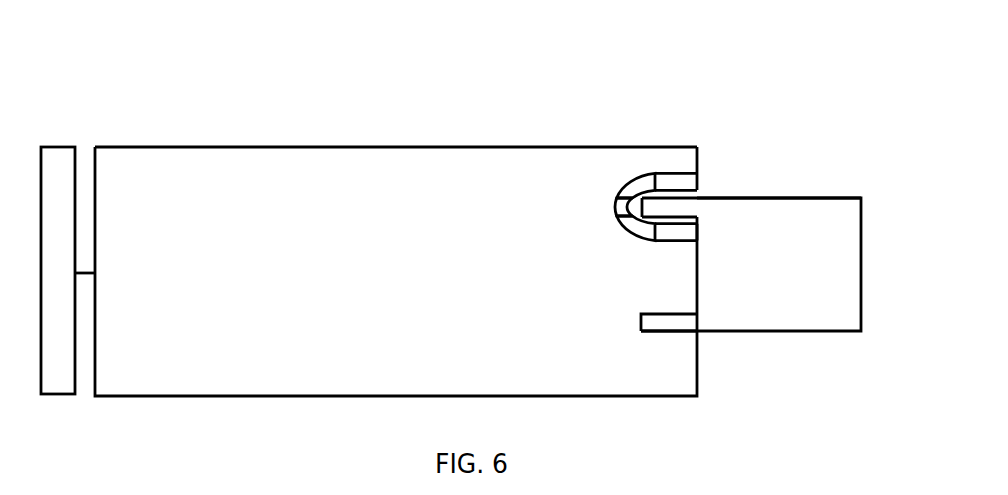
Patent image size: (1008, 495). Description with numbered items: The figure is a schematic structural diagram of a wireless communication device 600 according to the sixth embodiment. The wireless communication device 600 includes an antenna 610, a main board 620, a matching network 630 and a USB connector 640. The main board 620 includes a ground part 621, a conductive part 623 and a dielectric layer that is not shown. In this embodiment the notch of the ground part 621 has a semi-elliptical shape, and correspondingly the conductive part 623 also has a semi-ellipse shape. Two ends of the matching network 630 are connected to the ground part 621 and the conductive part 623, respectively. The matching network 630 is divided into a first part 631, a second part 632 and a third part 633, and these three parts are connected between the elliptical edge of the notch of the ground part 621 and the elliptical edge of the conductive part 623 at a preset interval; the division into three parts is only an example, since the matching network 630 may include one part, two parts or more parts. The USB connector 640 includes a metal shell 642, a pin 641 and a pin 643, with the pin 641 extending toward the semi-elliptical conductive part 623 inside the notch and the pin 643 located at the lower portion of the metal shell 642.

The wireless communication device 600 is at (438, 34).
The antenna 610 is at (131, 238).
The main board 620 is at (396, 232).
The ground part 621 is at (396, 122).
The conductive part 623 is at (604, 169).
The matching network 630 is at (517, 234).
The first part 631 is at (574, 197).
The second part 632 is at (563, 226).
The third part 633 is at (574, 252).
The USB connector 640 is at (762, 245).
The pin 641 is at (751, 186).
The metal shell 642 is at (762, 248).
The pin 643 is at (736, 356).